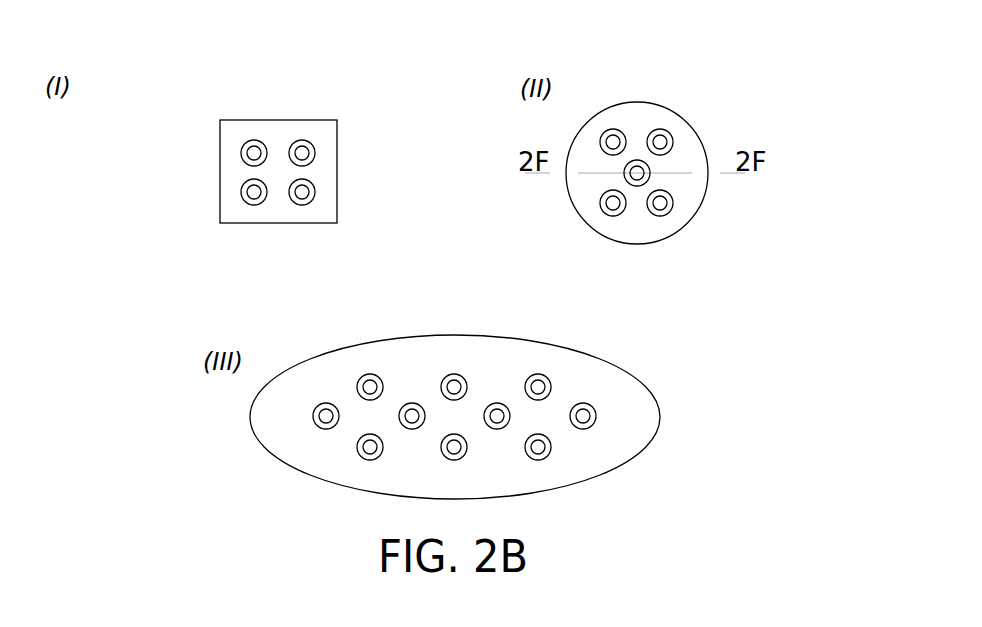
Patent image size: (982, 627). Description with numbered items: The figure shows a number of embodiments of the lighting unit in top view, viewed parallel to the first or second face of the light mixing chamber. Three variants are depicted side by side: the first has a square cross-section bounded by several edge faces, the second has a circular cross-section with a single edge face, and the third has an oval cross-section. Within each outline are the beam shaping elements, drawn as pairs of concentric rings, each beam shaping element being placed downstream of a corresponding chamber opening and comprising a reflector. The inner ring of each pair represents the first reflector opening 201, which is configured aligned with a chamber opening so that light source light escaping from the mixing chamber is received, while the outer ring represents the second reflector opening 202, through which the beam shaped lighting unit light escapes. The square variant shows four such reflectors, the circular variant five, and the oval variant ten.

The first reflector opening 201 is at (309, 152).
The second reflector opening 202 is at (313, 161).